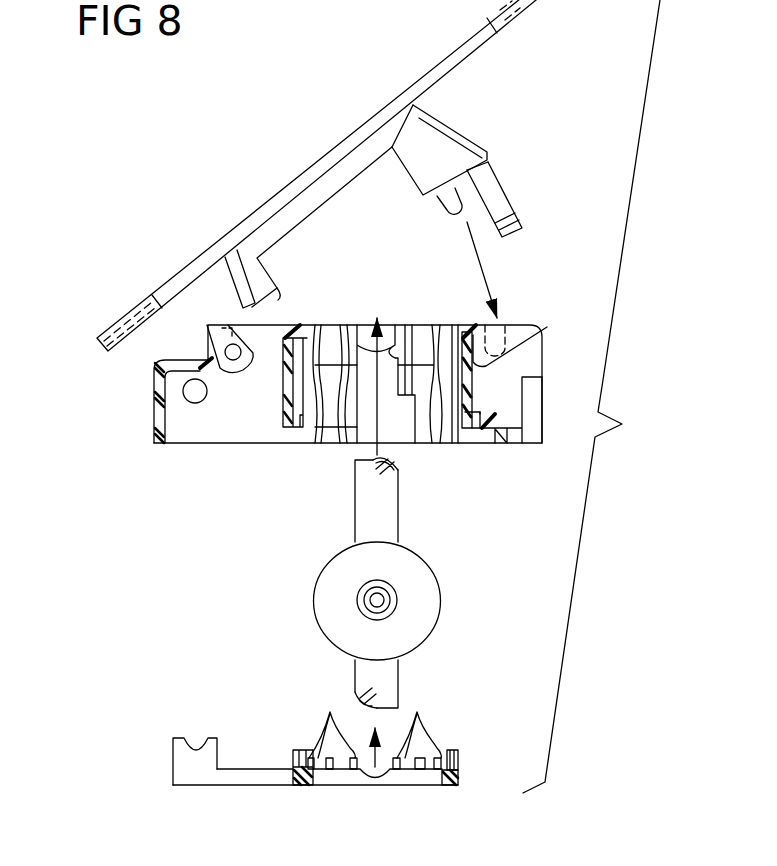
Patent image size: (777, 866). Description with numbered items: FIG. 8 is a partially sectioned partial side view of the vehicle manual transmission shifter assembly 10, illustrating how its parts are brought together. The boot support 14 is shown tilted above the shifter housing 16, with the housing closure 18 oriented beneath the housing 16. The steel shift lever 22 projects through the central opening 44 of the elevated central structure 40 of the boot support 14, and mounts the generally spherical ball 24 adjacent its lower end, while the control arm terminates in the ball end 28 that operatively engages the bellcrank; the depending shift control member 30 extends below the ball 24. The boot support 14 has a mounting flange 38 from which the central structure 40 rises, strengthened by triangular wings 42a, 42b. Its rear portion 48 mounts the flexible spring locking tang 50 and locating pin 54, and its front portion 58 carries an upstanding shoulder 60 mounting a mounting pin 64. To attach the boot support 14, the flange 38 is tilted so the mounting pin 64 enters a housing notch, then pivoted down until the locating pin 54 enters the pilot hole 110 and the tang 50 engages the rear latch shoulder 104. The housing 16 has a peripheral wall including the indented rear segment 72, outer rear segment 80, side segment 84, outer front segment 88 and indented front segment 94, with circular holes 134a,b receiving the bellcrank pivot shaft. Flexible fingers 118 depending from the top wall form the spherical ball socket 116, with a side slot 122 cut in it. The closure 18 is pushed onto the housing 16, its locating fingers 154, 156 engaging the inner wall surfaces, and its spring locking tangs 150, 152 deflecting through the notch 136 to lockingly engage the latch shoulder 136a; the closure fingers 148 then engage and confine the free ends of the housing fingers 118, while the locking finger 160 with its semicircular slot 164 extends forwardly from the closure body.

The vehicle manual transmission shifter assembly 10 is at (591, 396).
The boot support 14 is at (322, 175).
The shifter housing 16 is at (320, 402).
The housing closure 18 is at (294, 742).
The shift lever 22 is at (383, 520).
The ball 24 is at (412, 578).
The ball end 28 is at (385, 605).
The shift control member 30 is at (388, 672).
The mounting flange 38 is at (442, 63).
The elevated central structure 40 is at (370, 147).
The triangular wing 42a is at (228, 278).
The triangular wing 42b is at (420, 117).
The central opening 44 is at (413, 185).
The rear portion 48 is at (488, 163).
The spring locking tang 50 is at (498, 195).
The locating pin 54 is at (448, 208).
The front portion 58 is at (278, 297).
The shoulder 60 is at (283, 325).
The mounting pin 64 is at (212, 337).
The indented rear segment 72 is at (547, 327).
The outer rear segment 80 is at (545, 405).
The side segment 84 is at (225, 428).
The outer front segment 88 is at (153, 388).
The indented front segment 94 is at (283, 387).
The rear latch shoulder 104 is at (540, 372).
The pilot hole 110 is at (500, 330).
The spherical ball socket 116 is at (343, 428).
The flexible fingers 118 is at (323, 430).
The side slot 122 is at (393, 345).
The circular holes 134a,b is at (193, 404).
The notch 136 is at (483, 410).
The latch shoulder 136a is at (481, 413).
The closure fingers 148 is at (375, 724).
The spring locking tang 150 is at (453, 750).
The spring locking tang 152 is at (295, 755).
The locating fingers 154 is at (462, 770).
The locating fingers 156 is at (303, 750).
The locking finger 160 is at (220, 775).
The semicircular slot 164 is at (188, 747).